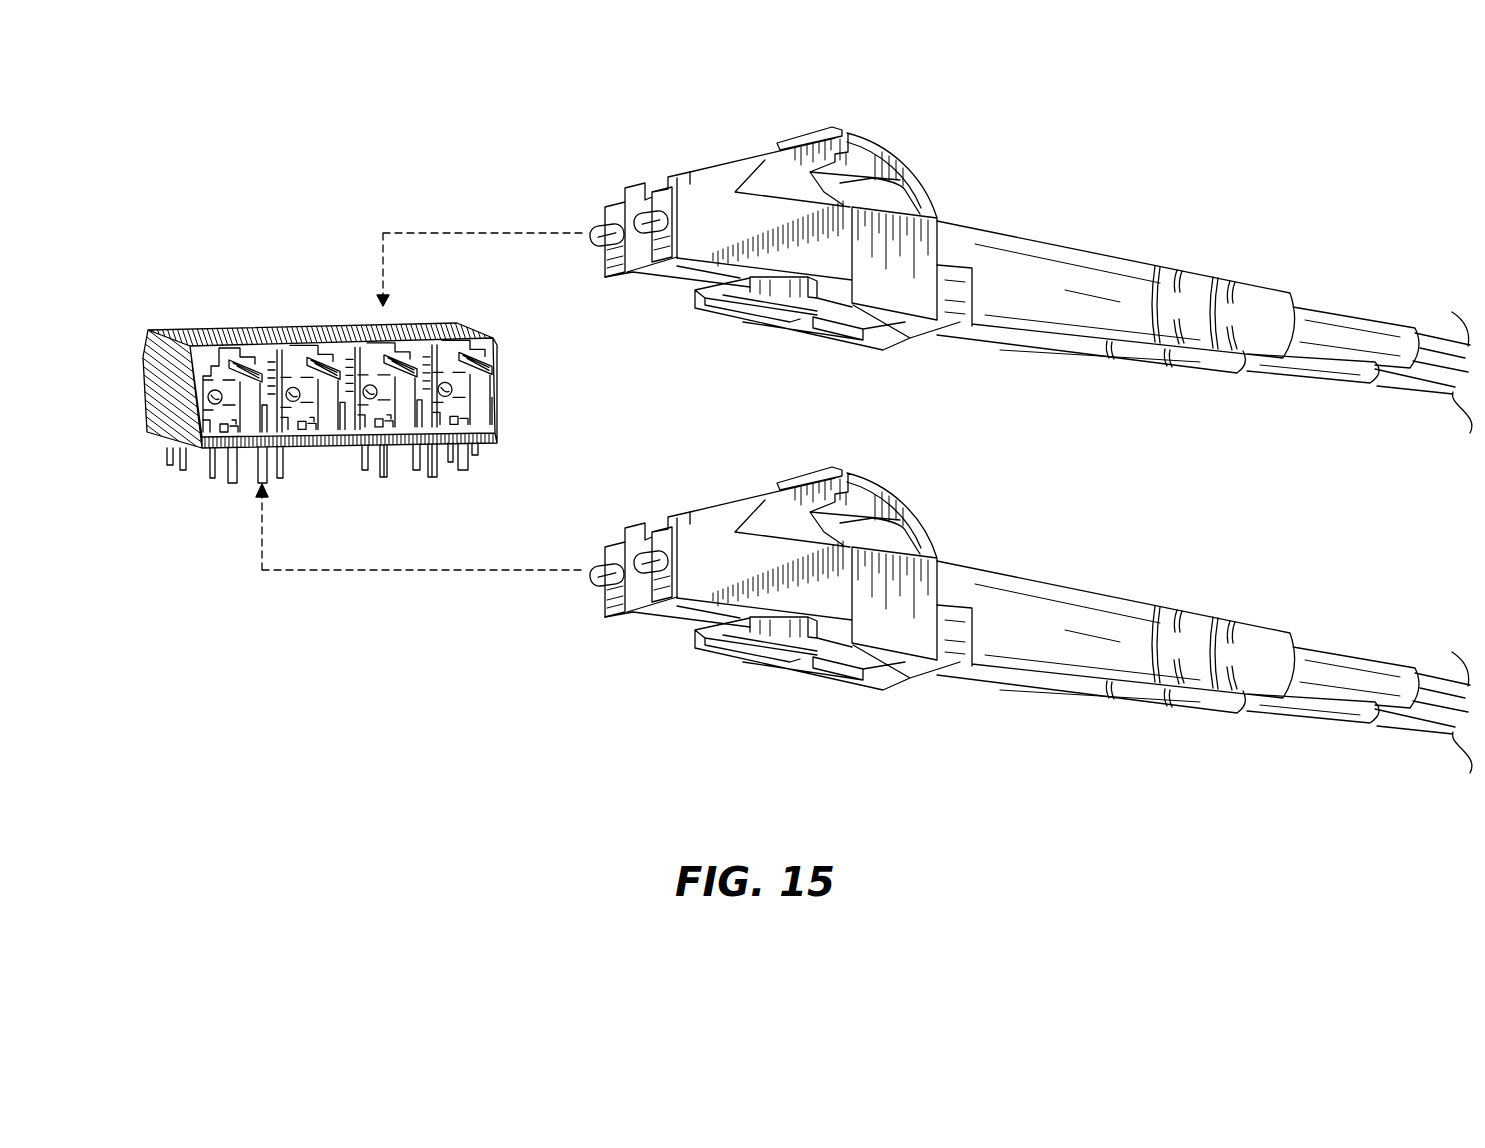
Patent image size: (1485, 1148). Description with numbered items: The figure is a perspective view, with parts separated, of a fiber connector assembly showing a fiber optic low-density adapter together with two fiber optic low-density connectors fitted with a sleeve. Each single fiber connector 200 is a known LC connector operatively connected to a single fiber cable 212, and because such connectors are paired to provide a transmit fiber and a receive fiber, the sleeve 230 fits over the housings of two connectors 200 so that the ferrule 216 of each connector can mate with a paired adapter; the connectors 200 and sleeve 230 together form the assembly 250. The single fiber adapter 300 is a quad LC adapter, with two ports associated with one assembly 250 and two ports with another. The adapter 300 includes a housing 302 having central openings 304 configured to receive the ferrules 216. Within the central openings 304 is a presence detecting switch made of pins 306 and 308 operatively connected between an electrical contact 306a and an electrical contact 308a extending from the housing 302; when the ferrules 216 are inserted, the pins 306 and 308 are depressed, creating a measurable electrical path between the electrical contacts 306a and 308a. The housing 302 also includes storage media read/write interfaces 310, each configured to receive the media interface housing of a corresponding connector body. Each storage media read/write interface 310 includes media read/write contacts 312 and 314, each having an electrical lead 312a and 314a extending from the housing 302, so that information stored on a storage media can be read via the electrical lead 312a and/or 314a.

The single fiber connector 200 is at (684, 152).
The single fiber cable 212 is at (1437, 332).
The ferrule 216 is at (598, 247).
The sleeve 230 is at (838, 357).
The assembly 250 is at (1025, 404).
The single fiber adapter 300 is at (290, 262).
The housing 302 is at (150, 322).
The central openings 304 is at (236, 368).
The pin 306 is at (362, 392).
The pin 308 is at (275, 360).
The storage media read/write interface 310 is at (475, 405).
The media read/write contact 312 is at (458, 437).
The media read/write contact 314 is at (466, 430).
The electrical contact 306a is at (354, 466).
The electrical contact 308a is at (408, 466).
The electrical lead 312a is at (372, 466).
The electrical lead 314a is at (384, 464).